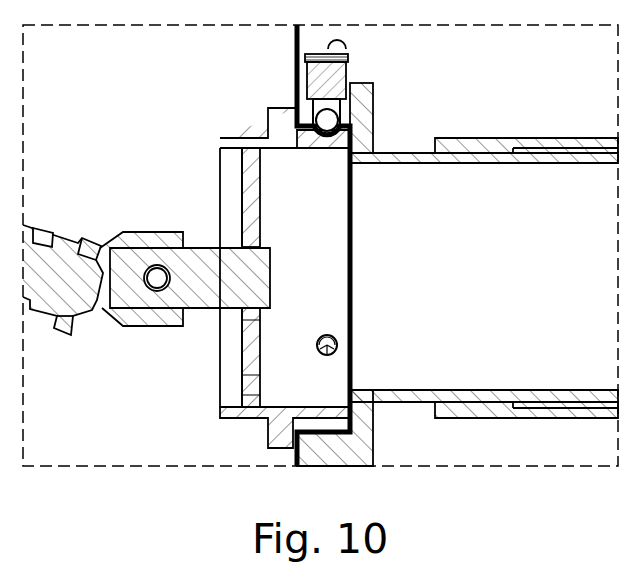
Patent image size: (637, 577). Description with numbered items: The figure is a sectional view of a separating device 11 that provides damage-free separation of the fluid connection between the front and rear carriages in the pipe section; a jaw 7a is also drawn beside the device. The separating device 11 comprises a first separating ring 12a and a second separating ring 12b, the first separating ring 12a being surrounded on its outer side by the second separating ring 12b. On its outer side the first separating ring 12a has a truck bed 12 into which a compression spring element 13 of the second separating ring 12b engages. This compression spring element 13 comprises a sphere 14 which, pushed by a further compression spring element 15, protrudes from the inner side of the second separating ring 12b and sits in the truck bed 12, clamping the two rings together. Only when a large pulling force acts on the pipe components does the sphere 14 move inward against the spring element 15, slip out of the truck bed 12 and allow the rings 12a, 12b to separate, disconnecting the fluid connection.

The gripping jaw 7a is at (92, 245).
The separating device 11 is at (365, 213).
The truck bed 12 is at (335, 140).
The first separating ring 12a is at (302, 135).
The second separating ring 12b is at (352, 115).
The compression spring element 13 is at (334, 98).
The sphere 14 is at (325, 120).
The compression spring element 15 is at (320, 106).